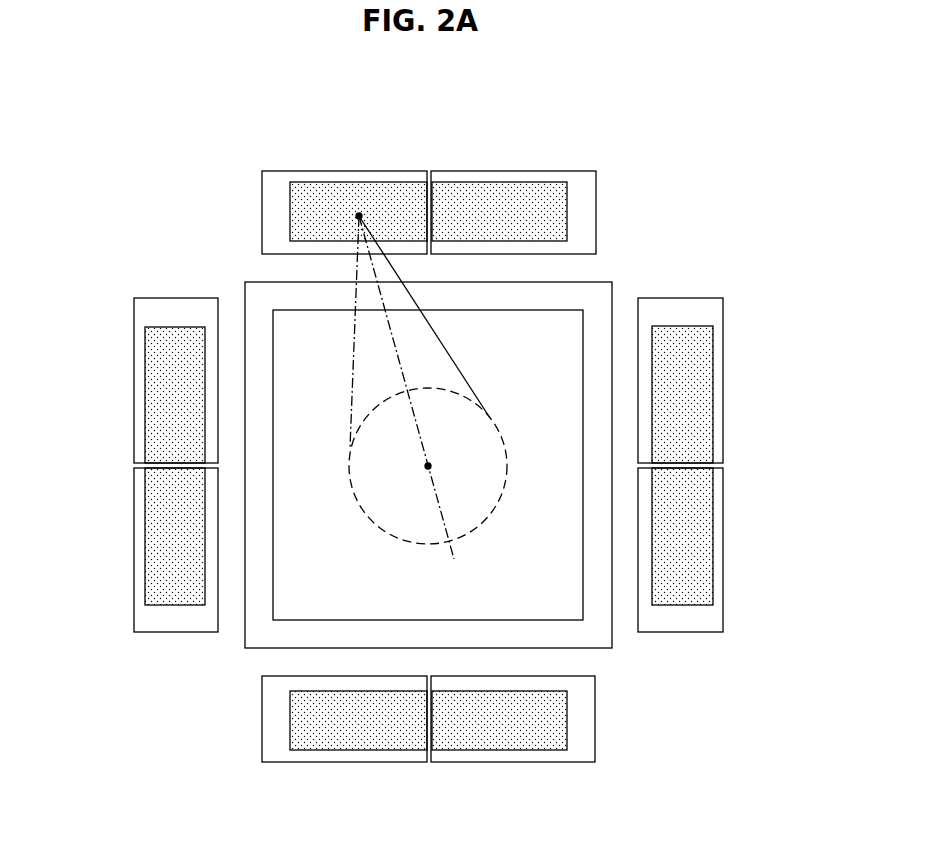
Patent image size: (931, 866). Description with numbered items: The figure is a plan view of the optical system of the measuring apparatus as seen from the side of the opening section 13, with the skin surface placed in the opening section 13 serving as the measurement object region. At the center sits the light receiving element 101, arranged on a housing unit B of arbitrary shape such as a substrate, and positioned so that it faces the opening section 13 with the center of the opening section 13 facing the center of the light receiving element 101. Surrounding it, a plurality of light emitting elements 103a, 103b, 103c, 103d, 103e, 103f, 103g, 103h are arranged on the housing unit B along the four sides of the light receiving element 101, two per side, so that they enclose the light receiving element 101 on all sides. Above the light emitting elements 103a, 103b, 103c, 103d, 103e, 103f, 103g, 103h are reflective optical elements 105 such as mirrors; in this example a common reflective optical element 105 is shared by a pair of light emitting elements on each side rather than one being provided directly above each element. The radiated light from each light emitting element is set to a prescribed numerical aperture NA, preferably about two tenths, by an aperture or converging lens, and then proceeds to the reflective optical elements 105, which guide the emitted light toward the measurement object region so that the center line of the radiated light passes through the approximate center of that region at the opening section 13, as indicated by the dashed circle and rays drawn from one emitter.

The light receiving element 101 is at (530, 380).
The light emitting element 103a is at (343, 170).
The light emitting element 103b is at (513, 170).
The light emitting element 103c is at (725, 378).
The light emitting element 103d is at (725, 545).
The light emitting element 103e is at (513, 765).
The light emitting element 103f is at (345, 765).
The light emitting element 103g is at (135, 548).
The light emitting element 103h is at (135, 378).
The reflective optical element 105 is at (410, 205).
The opening section 13 is at (476, 525).
The housing unit B is at (590, 652).
The numerical aperture NA is at (356, 360).